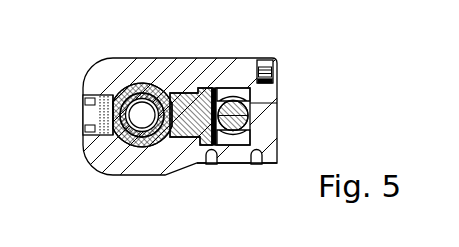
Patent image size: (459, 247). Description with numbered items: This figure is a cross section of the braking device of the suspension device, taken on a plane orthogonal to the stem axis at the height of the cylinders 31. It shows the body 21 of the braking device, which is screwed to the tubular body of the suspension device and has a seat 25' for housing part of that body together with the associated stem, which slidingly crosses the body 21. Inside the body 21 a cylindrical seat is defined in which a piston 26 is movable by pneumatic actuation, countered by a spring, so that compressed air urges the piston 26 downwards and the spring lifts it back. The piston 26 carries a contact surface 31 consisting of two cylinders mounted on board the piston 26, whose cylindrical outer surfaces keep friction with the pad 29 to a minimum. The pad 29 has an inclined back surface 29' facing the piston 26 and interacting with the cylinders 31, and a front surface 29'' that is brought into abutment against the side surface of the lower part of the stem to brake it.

The body 21 is at (103, 163).
The seat 25' is at (107, 84).
The piston 26 is at (264, 103).
The pad 29 is at (214, 156).
The inclined back surface 29' is at (243, 53).
The front surface 29'' is at (134, 160).
The contact surface 31 is at (230, 92).